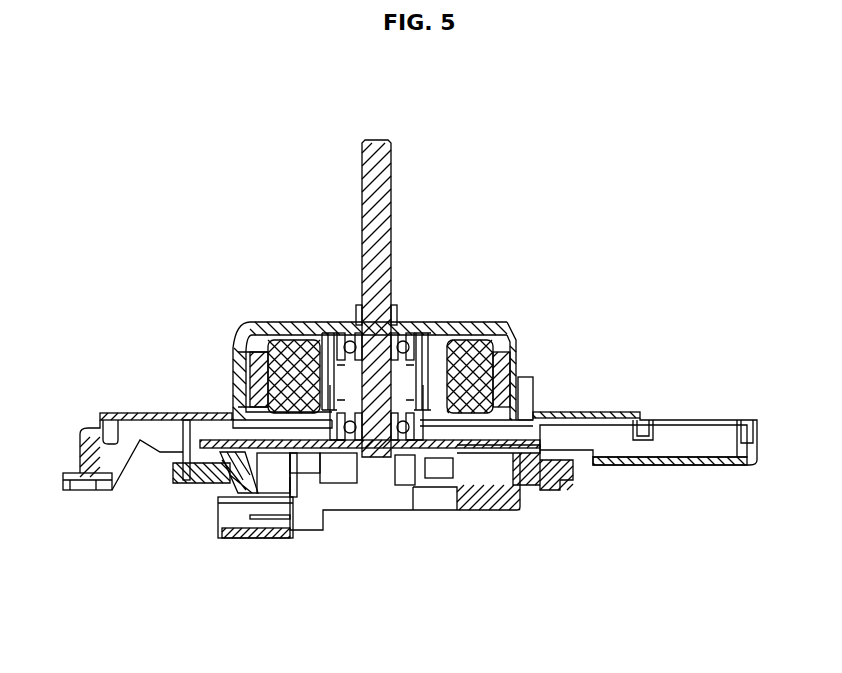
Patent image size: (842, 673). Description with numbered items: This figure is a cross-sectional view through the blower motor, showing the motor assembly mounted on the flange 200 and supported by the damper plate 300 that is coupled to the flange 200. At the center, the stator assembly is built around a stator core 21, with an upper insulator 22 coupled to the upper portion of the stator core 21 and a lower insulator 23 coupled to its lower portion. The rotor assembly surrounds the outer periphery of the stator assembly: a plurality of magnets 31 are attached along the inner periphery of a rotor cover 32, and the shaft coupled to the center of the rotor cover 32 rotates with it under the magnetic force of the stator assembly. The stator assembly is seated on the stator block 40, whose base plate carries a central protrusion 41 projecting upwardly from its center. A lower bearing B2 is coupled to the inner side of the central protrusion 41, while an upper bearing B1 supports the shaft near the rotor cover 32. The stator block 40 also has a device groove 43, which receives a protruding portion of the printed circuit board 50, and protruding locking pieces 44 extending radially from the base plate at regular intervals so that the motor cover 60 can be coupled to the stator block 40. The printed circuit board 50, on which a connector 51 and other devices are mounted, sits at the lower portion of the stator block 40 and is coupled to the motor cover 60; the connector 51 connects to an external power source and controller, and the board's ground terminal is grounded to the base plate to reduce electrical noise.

The flange 200 is at (140, 412).
The damper plate 300 is at (563, 490).
The stator core 21 is at (497, 328).
The upper insulator 22 is at (447, 350).
The lower insulator 23 is at (238, 393).
The magnets 31 is at (487, 378).
The rotor cover 32 is at (254, 322).
The stator block 40 is at (527, 410).
The central protrusion 41 is at (437, 455).
The device groove 43 is at (278, 453).
The protruding locking piece 44 is at (570, 412).
The printed circuit board 50 is at (345, 485).
The connector 51 is at (257, 537).
The motor cover 60 is at (495, 503).
The first bearing B1 is at (343, 327).
The lower bearing B2 is at (422, 462).